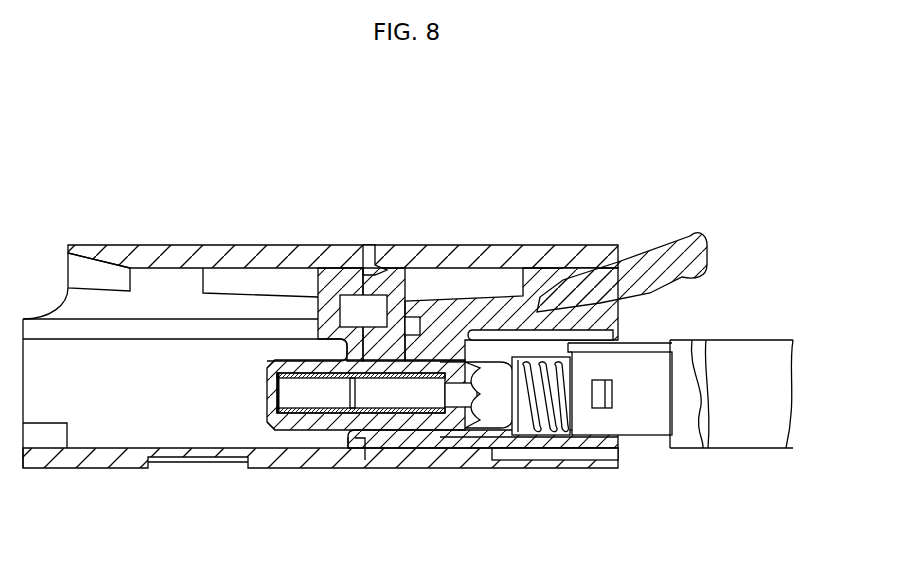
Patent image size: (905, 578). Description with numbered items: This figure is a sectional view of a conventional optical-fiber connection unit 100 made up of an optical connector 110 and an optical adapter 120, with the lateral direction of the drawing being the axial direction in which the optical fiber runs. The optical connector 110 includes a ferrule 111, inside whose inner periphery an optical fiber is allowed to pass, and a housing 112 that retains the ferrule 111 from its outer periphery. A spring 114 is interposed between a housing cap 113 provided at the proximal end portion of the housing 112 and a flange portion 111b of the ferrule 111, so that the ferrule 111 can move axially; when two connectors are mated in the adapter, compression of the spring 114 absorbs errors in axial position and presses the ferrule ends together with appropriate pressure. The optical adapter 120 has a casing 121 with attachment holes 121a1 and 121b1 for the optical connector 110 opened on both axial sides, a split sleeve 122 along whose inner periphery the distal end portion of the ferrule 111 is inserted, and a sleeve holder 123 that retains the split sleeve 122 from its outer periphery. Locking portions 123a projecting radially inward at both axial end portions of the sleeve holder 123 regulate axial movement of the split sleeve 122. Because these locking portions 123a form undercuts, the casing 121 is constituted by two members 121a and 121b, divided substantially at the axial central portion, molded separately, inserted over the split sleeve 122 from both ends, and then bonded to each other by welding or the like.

The optical-fiber connection unit 100 is at (557, 210).
The optical connector 110 is at (686, 340).
The ferrule 111 is at (382, 398).
The flange portion 111b is at (500, 373).
The housing 112 is at (488, 438).
The housing cap 113 is at (645, 417).
The spring 114 is at (552, 423).
The optical adapter 120 is at (221, 245).
The casing 121 is at (283, 462).
The member 121a is at (442, 460).
The attachment hole 121a1 is at (418, 437).
The member 121b is at (118, 462).
The attachment hole 121b1 is at (102, 443).
The split sleeve 122 is at (333, 412).
The sleeve holder 123 is at (402, 367).
The locking portion 123a is at (265, 382).